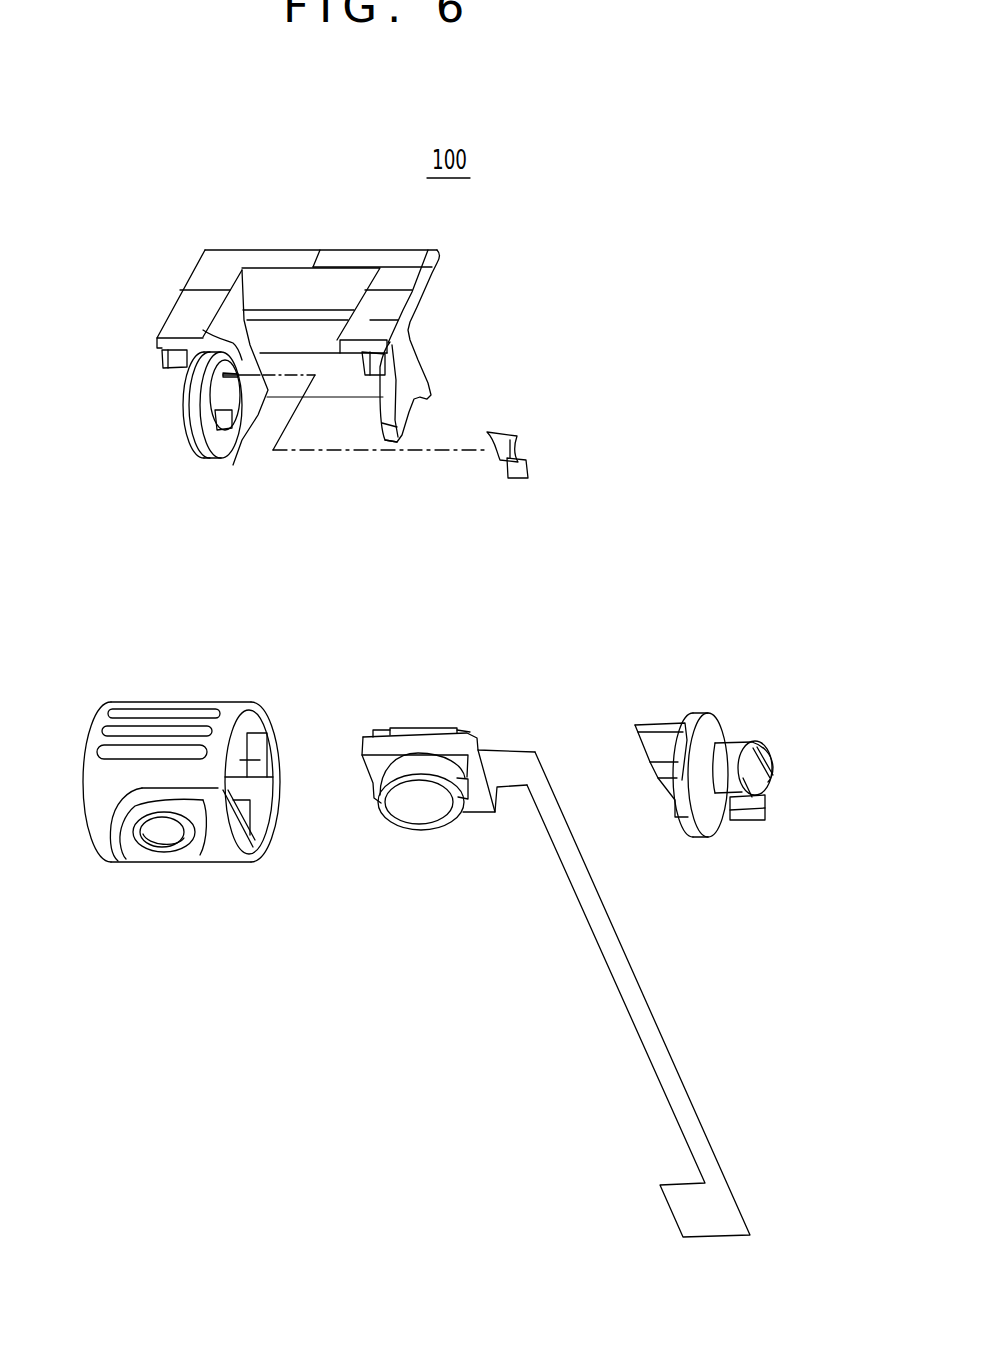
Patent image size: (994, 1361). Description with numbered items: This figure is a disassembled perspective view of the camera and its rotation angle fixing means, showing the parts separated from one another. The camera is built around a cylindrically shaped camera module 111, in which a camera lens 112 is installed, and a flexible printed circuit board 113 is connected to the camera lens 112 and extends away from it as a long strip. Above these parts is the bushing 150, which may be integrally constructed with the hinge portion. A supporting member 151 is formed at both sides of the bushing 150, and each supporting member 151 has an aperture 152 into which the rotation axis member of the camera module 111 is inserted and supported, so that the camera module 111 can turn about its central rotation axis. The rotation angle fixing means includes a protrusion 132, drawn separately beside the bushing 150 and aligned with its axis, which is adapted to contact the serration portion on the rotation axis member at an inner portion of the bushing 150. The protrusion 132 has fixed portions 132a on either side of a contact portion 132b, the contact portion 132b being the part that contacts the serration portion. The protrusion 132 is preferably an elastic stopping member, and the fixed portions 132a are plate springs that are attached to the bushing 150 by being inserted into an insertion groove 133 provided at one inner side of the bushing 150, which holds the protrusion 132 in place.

The bushing 150 is at (413, 268).
The supporting member 151 is at (203, 458).
The aperture 152 is at (230, 430).
The insertion groove 133 is at (232, 348).
The protrusion 132 is at (599, 476).
The fixed portion 132a is at (517, 442).
The contact portion 132b is at (528, 463).
The camera module 111 is at (216, 847).
The camera lens 112 is at (405, 810).
The flexible printed circuit board 113 is at (683, 1212).